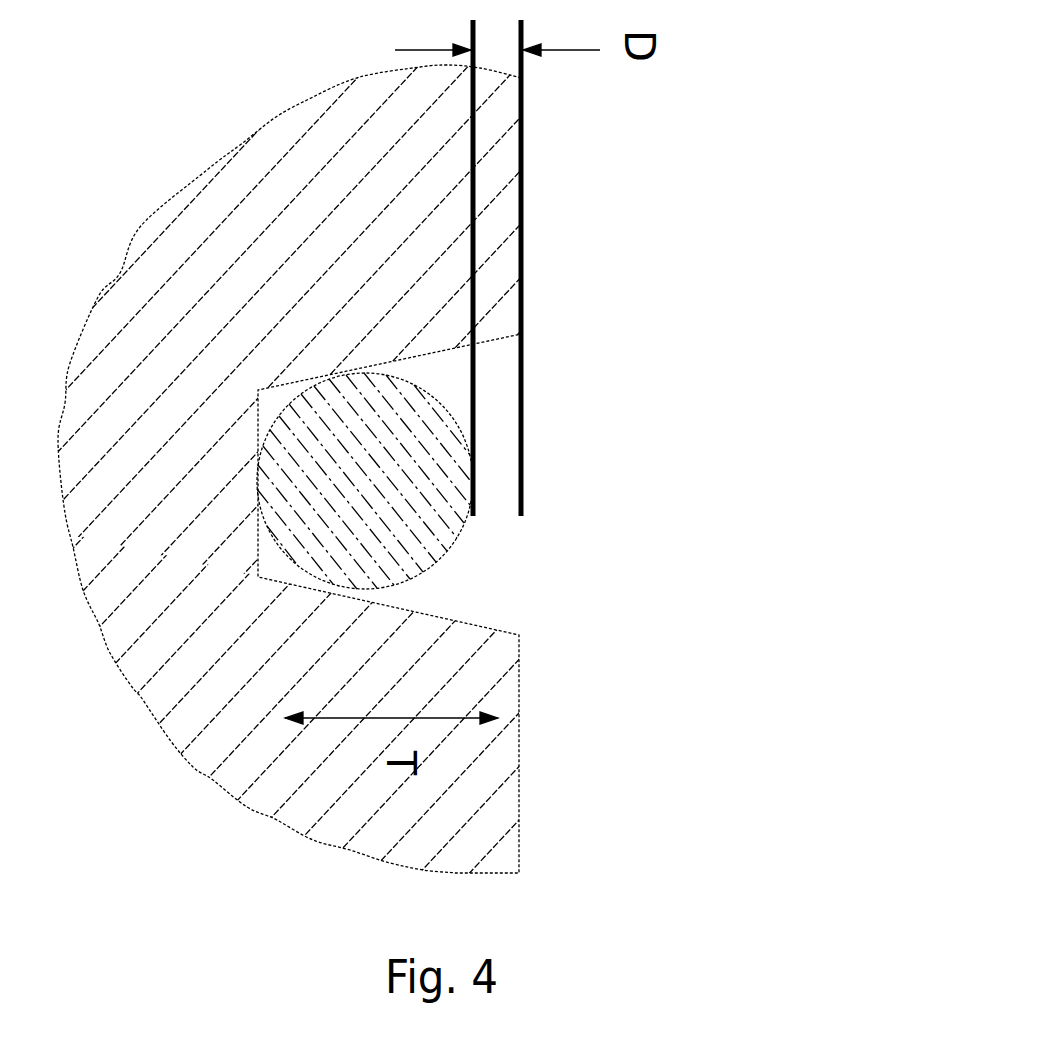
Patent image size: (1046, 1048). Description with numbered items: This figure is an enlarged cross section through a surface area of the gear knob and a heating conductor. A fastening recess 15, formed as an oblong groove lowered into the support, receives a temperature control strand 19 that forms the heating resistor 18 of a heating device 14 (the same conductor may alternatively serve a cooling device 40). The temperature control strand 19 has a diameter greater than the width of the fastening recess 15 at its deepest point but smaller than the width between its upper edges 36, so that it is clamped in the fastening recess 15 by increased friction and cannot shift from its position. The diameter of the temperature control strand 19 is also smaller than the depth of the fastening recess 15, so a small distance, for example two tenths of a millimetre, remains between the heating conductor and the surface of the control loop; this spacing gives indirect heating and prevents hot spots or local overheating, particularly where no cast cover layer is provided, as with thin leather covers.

The heating device 14 is at (572, 520).
The fastening recess 15 is at (503, 452).
The heating resistor 18 is at (572, 520).
The temperature control strand 19 is at (572, 520).
The upper edges 36 is at (527, 635).
The cooling device 40 is at (457, 555).